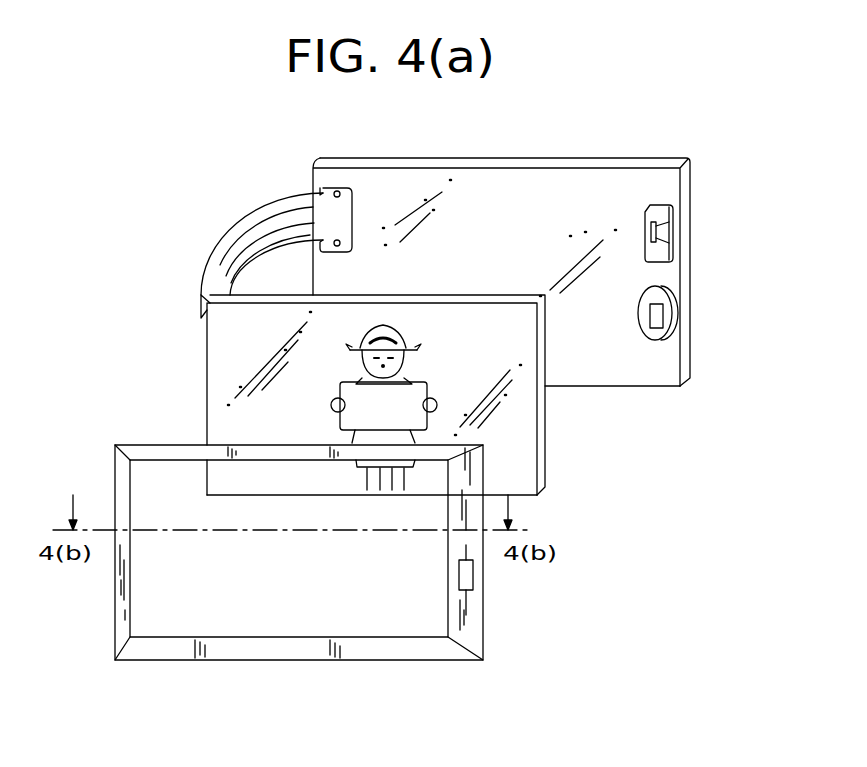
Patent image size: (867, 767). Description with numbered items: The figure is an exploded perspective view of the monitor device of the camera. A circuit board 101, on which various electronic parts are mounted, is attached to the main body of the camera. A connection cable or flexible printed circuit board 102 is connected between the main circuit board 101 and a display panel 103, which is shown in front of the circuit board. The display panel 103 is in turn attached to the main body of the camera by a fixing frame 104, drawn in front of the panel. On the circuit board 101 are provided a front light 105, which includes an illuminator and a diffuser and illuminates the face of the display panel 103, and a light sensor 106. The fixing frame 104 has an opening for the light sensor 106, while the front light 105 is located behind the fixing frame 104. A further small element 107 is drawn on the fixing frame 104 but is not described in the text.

The circuit board 101 is at (530, 196).
The connection cable or flexible printed circuit board 102 is at (220, 216).
The display panel 103 is at (222, 360).
The fixing frame 104 is at (367, 660).
The front light 105 is at (673, 232).
The light sensor 106 is at (677, 307).
The switch on frame 107 is at (473, 574).